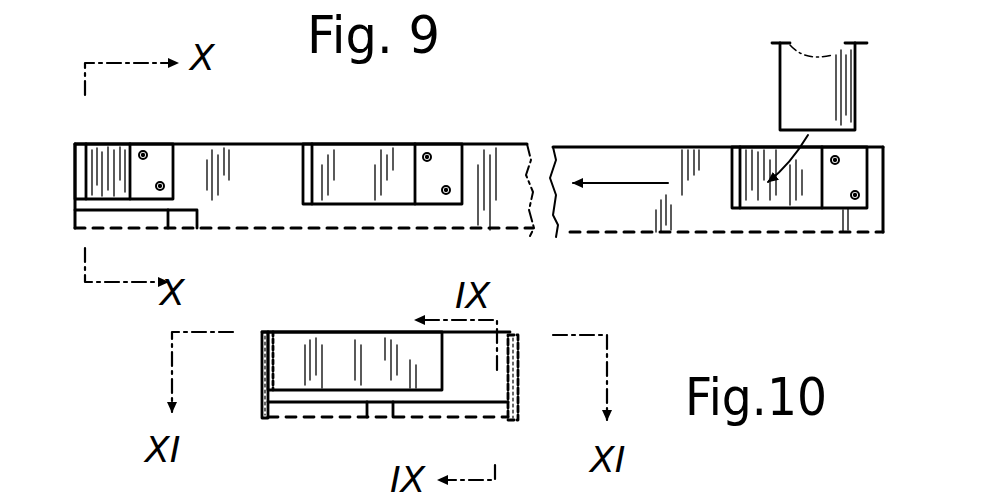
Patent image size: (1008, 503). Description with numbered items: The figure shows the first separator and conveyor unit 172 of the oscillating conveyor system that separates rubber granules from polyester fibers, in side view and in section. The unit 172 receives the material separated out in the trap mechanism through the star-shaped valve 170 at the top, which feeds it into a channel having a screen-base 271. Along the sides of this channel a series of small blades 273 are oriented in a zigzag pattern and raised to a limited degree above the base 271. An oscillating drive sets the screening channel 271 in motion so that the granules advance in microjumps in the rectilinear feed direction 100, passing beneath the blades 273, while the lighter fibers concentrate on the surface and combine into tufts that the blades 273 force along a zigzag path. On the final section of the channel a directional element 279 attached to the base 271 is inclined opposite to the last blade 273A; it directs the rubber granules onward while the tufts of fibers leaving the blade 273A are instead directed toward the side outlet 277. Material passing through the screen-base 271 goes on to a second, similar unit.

In FIG. 9, the screen-base 271 is at (342, 233).
In FIG. 10, the screen-base 271 is at (310, 420).
In FIG. 9, the small blades 273 is at (377, 152).
In FIG. 10, the small blades 273 is at (340, 352).
In FIG. 9, the last blade 273A is at (117, 153).
In FIG. 9, the outlet 277 is at (40, 222).
In FIG. 9, the directional element 279 is at (185, 218).
In FIG. 10, the directional element 279 is at (445, 413).
In FIG. 9, the star-shaped valve 170 is at (789, 83).
In FIG. 9, the separator and conveyor unit 172 is at (660, 244).
In FIG. 9, the rectilinear direction f100 100 is at (608, 183).